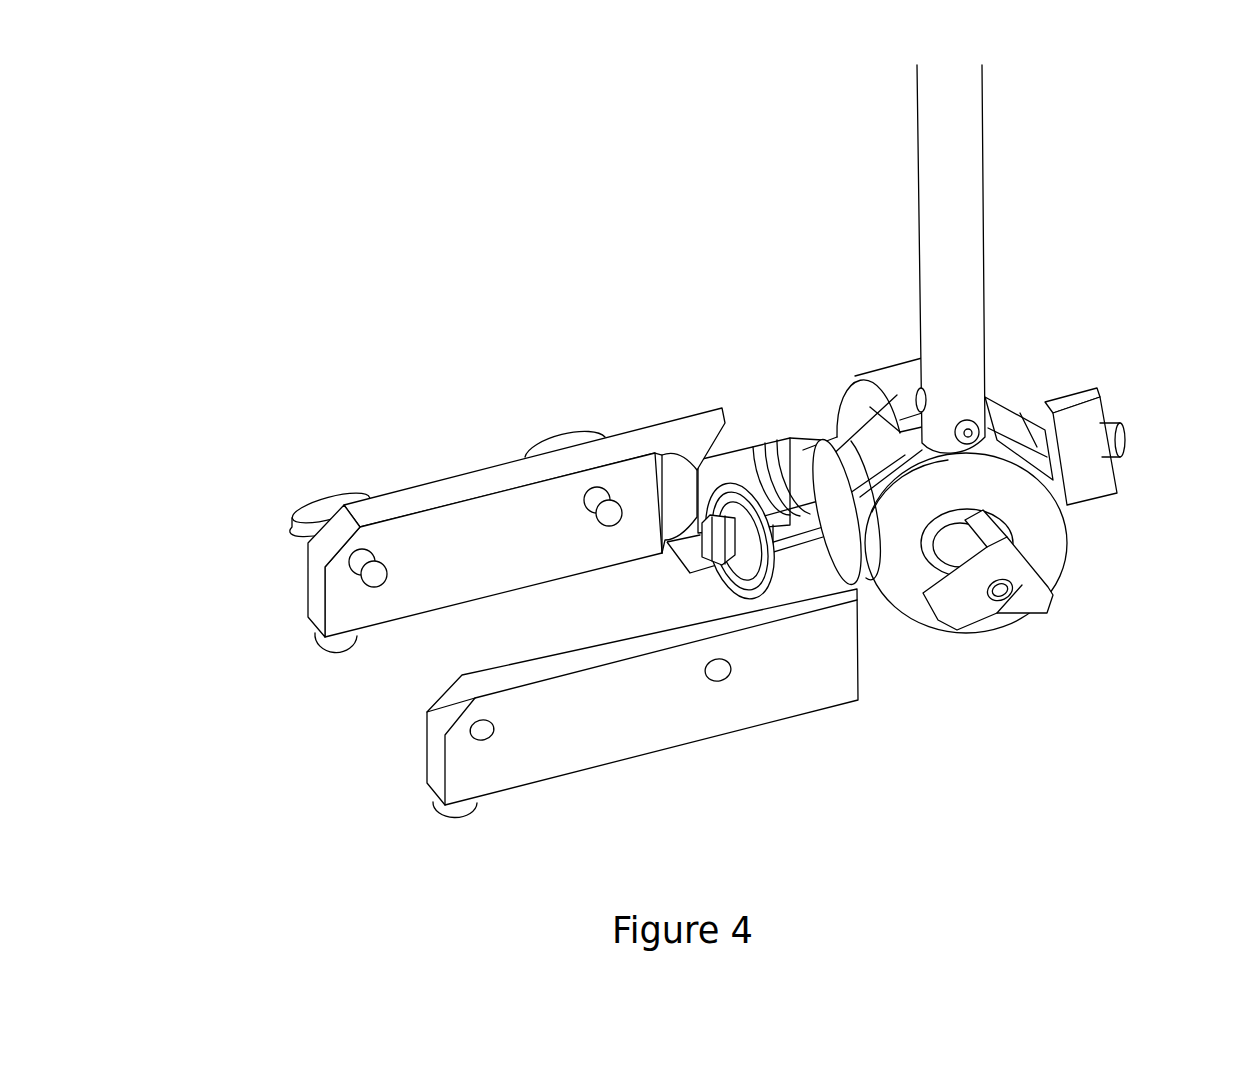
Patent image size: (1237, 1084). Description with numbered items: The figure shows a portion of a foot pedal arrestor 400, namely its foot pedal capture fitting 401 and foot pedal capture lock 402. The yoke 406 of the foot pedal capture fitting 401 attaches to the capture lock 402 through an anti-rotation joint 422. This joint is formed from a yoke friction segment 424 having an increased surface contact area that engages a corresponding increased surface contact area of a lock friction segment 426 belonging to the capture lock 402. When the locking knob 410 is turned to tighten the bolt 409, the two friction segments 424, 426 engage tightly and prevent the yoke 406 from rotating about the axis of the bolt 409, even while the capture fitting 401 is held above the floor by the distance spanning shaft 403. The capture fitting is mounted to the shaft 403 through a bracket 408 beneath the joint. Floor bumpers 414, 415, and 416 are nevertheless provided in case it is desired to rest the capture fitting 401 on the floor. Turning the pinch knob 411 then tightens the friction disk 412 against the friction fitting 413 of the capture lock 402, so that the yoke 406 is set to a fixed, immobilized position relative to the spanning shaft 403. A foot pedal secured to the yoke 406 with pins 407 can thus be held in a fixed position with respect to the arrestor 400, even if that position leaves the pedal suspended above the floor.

The foot pedal arrestor 400 is at (695, 485).
The foot pedal capture fitting 401 is at (790, 760).
The foot pedal capture lock 402 is at (1012, 385).
The distance spanning shaft 403 is at (967, 267).
The yoke 406 is at (460, 482).
The pins 407 is at (562, 435).
The bracket 408 is at (677, 570).
The bolt 409 is at (712, 537).
The locking knob 410 is at (1078, 421).
The pinch knob 411 is at (1027, 595).
The friction disk 412 is at (908, 605).
The friction fitting 413 is at (857, 433).
The floor bumper 414 is at (893, 373).
The floor bumper 415 is at (312, 637).
The floor bumper 416 is at (441, 813).
The anti-rotation joint 422 is at (758, 373).
The yoke friction segment 424 is at (753, 467).
The lock friction segment 426 is at (803, 450).